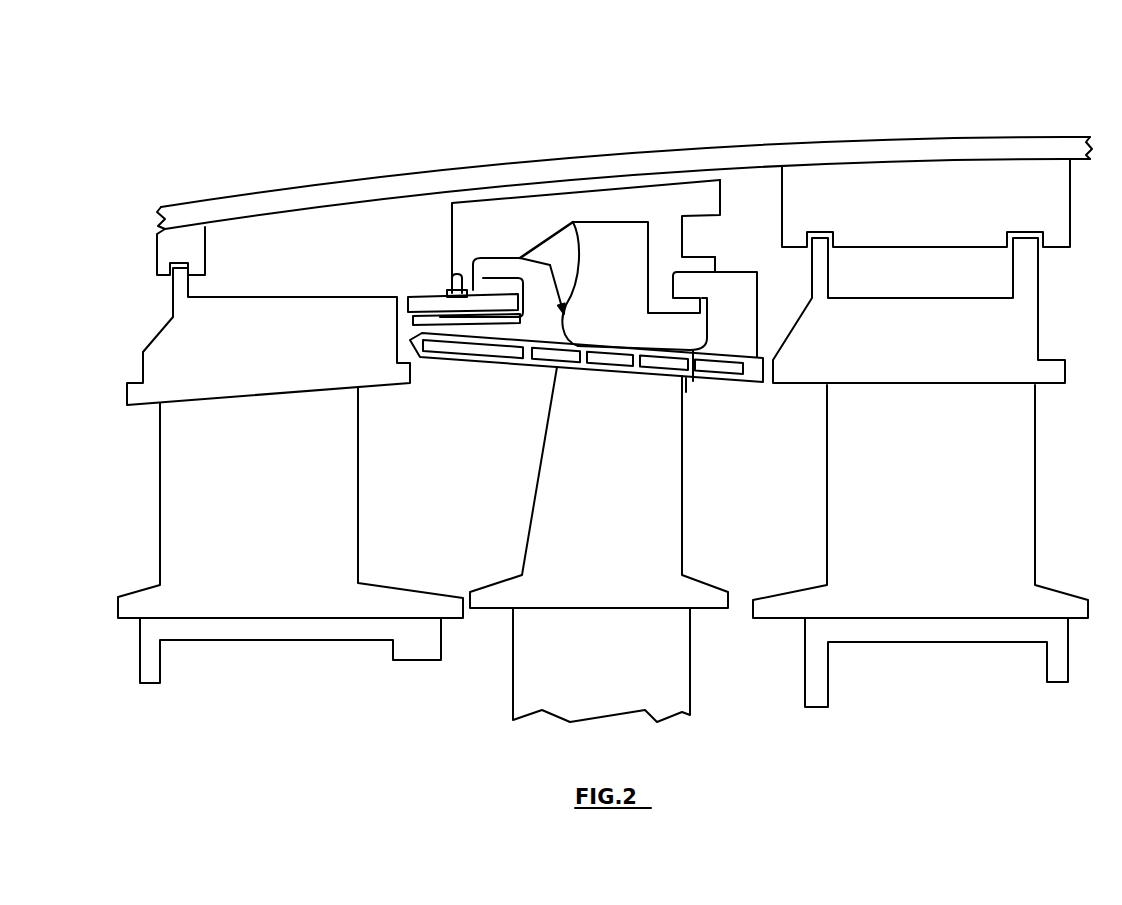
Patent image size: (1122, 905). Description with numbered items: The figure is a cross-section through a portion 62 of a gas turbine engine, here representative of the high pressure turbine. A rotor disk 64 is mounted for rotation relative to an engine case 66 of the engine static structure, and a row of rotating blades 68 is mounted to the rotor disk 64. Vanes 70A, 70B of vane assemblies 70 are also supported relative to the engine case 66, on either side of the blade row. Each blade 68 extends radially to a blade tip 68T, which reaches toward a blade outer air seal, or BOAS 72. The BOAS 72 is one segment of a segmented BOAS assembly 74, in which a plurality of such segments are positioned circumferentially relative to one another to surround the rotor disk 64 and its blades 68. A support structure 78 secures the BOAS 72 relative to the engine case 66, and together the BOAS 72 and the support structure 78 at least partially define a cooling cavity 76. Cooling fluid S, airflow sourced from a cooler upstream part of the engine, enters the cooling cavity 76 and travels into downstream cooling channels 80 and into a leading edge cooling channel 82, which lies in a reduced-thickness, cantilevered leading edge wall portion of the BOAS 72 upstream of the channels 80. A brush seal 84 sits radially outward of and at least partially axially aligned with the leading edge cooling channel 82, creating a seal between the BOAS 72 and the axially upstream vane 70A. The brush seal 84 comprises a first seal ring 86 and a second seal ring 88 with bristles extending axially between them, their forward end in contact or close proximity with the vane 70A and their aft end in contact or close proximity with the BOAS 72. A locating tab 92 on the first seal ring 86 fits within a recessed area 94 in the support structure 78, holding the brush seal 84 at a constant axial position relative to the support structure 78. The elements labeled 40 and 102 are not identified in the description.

The portion of a gas turbine engine 62 is at (978, 98).
The engine case 66 is at (482, 172).
The vane outer platform structure 40 is at (273, 266).
The vane assemblies 70 is at (115, 650).
The vane 70A is at (283, 503).
The vane 70B is at (952, 502).
The rotating blades 68 is at (640, 501).
The blade tip 68T is at (692, 380).
The rotor disk 64 is at (692, 736).
The cooling cavity 76 is at (610, 314).
The support structure 78 is at (683, 202).
The blade outer air seal 72 is at (712, 346).
The BOAS assembly 74 is at (463, 393).
The cooling channels 80 is at (577, 348).
The leading edge cooling channel 82 is at (482, 358).
The brush seal 84 is at (416, 276).
The first seal ring 86 is at (455, 302).
The second seal ring 88 is at (427, 320).
The locating tab 92 is at (467, 282).
The recessed area 94 is at (455, 276).
The seal strip 102 is at (573, 222).
The cooling fluid S is at (605, 275).